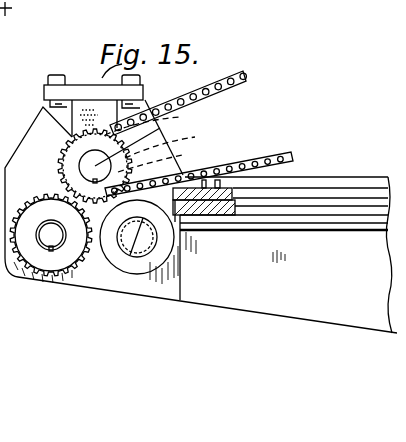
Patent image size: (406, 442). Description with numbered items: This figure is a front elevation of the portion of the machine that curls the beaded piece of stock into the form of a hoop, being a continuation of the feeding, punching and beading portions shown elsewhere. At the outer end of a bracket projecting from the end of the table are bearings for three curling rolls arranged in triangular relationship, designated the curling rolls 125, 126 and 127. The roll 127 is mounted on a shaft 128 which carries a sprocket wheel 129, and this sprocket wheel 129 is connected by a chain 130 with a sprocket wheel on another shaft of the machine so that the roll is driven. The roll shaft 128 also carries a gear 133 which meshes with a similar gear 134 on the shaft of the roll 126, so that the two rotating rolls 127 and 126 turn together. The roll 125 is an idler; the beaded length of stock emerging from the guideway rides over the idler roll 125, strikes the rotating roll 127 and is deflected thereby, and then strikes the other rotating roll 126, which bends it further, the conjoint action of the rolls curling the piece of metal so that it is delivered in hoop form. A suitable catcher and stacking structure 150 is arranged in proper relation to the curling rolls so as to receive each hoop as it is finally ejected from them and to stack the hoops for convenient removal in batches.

The curling roll 125 is at (134, 268).
The curling roll 126 is at (78, 267).
The curling roll 127 is at (40, 108).
The shaft 128 is at (175, 142).
The sprocket wheel 129 is at (158, 122).
The chain 130 is at (200, 96).
The gear 133 is at (199, 169).
The gear 134 is at (56, 283).
The catcher and stacking structure 150 is at (25, 10).